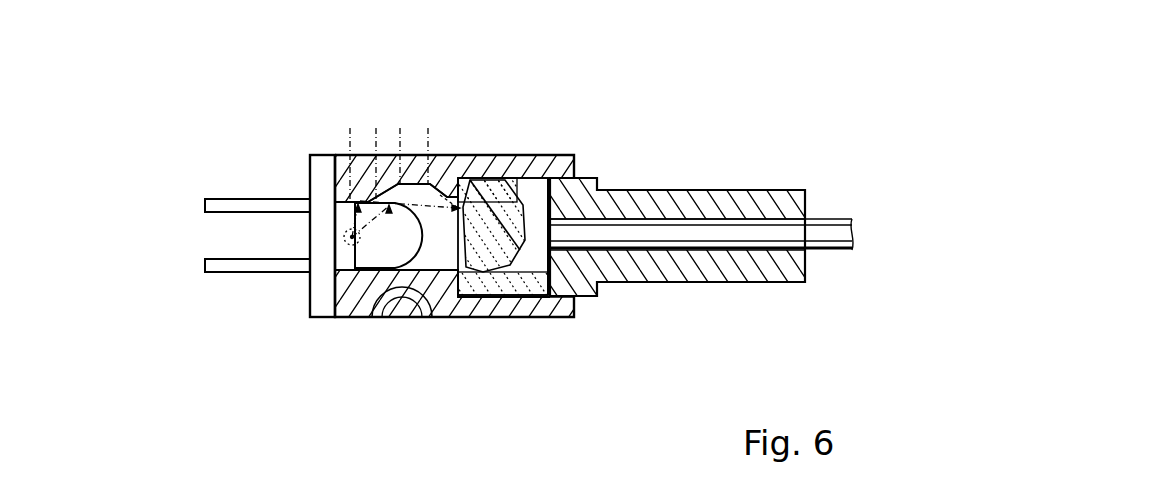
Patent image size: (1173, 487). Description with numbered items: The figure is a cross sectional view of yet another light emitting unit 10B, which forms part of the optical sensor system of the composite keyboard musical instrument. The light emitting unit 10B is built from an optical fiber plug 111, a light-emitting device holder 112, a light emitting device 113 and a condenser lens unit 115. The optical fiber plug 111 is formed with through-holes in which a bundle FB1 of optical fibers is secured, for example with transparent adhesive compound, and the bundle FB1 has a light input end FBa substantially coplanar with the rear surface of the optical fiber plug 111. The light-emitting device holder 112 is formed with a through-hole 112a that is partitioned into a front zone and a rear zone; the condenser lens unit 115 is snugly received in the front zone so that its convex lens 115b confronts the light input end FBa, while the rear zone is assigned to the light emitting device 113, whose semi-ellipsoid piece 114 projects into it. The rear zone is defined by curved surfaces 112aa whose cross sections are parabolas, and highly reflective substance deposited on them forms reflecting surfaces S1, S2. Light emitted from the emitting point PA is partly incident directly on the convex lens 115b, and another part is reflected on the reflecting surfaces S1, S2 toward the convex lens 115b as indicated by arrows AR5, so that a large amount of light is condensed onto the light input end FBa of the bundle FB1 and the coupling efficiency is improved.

The light emitting unit 10B is at (532, 225).
The optical fiber plug 111 is at (685, 187).
The light-emitting device holder 112 is at (455, 317).
The through-hole 112a is at (400, 320).
The curved surface 112aa is at (431, 366).
The light emitting device 113 is at (325, 318).
The semi-ellipsoid piece 114 is at (380, 272).
The condenser lens unit 115 is at (502, 297).
The convex lens 115b is at (527, 200).
The light input end FBa is at (543, 297).
The bundle of optical fibers FB1 is at (830, 252).
The light emitting point PA is at (350, 234).
The reflecting surface S1 is at (376, 129).
The reflecting surface S2 is at (428, 129).
The arrows AR5 is at (440, 195).